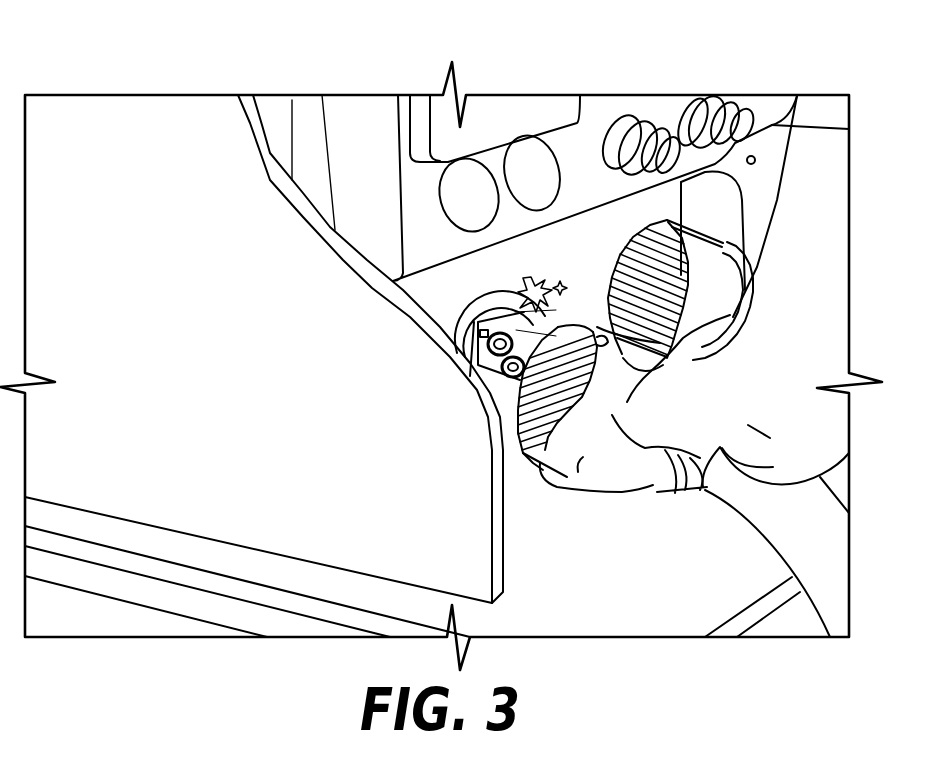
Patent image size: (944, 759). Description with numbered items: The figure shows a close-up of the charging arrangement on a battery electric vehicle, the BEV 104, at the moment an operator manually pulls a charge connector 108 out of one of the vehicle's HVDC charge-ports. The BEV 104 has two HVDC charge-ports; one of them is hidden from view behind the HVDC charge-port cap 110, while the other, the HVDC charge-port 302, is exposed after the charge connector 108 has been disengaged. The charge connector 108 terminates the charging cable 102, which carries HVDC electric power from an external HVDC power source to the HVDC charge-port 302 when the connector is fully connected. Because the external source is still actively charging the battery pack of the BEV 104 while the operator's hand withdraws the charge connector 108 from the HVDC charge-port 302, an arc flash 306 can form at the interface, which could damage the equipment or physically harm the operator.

The charging cable 102 is at (770, 532).
The BEV 104 is at (174, 115).
The charge connector 108 is at (540, 462).
The HVDC charge-port cap 110 is at (618, 268).
The HVDC charge-port 302 is at (458, 327).
The arc flash 306 is at (526, 288).